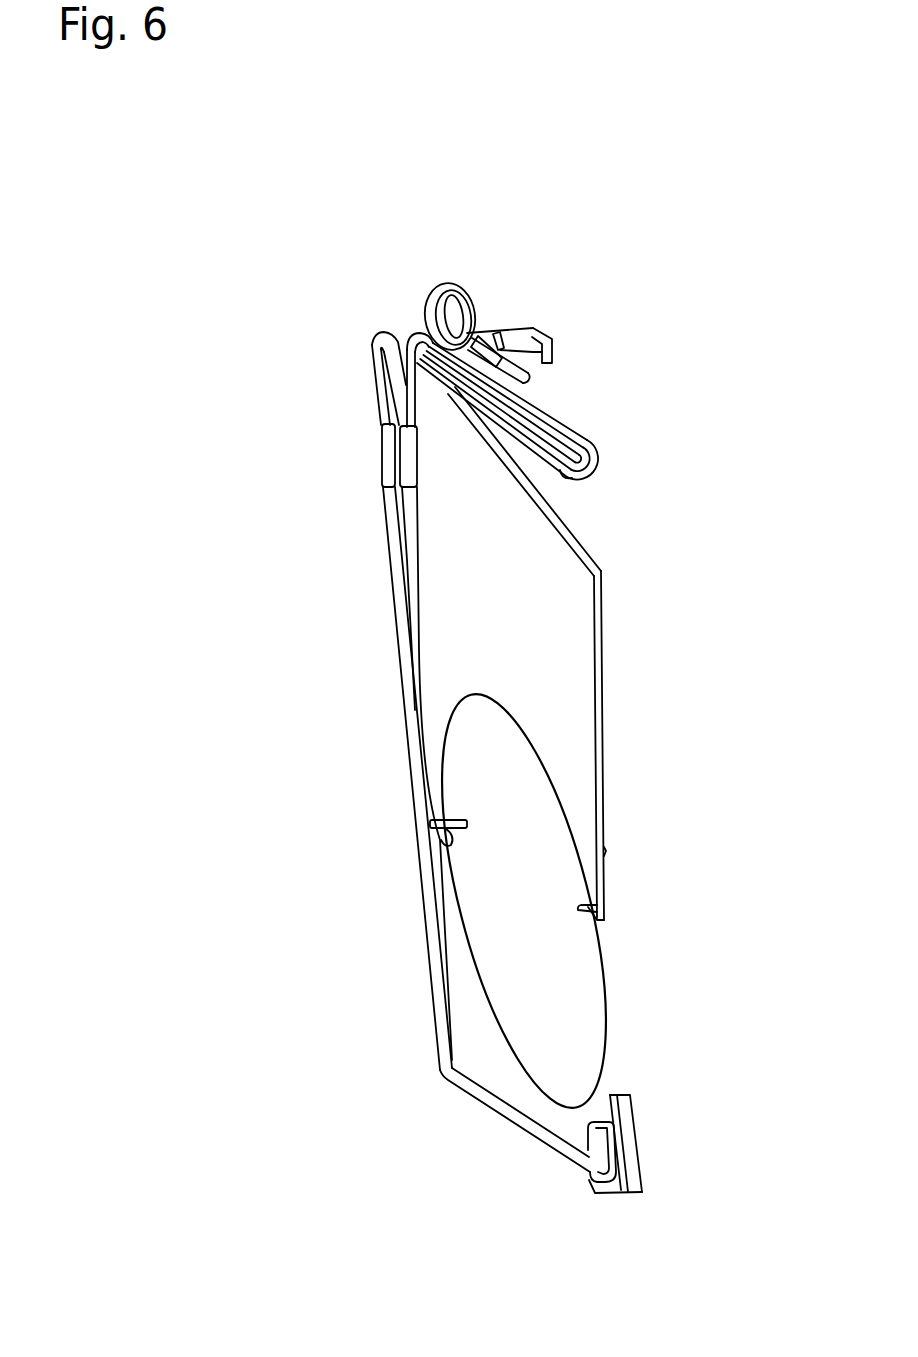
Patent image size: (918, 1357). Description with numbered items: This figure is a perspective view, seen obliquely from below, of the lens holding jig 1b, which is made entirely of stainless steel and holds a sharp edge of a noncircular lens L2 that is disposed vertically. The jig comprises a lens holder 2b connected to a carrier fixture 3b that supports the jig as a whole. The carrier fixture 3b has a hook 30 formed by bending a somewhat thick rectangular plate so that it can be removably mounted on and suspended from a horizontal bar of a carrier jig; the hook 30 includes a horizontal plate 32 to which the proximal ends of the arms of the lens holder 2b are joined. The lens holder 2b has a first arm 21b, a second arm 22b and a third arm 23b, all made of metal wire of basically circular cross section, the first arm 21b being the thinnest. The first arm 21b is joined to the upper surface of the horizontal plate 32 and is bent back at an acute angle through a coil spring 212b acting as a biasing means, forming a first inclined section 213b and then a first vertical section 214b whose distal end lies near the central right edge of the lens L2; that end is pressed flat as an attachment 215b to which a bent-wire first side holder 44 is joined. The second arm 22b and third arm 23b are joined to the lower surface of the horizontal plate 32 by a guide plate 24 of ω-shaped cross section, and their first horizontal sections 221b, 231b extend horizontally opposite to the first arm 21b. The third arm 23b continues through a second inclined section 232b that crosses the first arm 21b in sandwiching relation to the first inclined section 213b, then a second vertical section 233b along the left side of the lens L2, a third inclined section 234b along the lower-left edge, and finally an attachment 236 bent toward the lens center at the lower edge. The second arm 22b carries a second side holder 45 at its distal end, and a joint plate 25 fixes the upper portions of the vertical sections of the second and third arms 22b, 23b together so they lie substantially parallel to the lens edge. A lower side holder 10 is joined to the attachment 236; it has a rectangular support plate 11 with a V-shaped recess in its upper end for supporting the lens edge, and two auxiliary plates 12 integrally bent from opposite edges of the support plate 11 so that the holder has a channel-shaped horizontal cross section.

The lens holding jig 1b is at (268, 266).
The lens holder 2b is at (298, 435).
The carrier fixture 3b is at (570, 346).
The lower side holder 10 is at (650, 1137).
The support plate 11 is at (613, 1193).
The auxiliary plates 12 is at (637, 1178).
The first arm 21b is at (627, 613).
The second arm 22b is at (421, 535).
The third arm 23b is at (378, 1003).
The guide plate 24 is at (512, 367).
The joint plate 25 is at (385, 462).
The hook 30 is at (540, 318).
The horizontal plate 32 is at (492, 330).
The first side holder 44 is at (595, 936).
The second side holder 45 is at (450, 843).
The coil spring 212b is at (429, 295).
The first inclined section 213b is at (583, 542).
The first vertical section 214b is at (607, 687).
The attachment 215b is at (608, 879).
The first horizontal section 221b is at (573, 429).
The first horizontal section 231b is at (558, 477).
The second inclined section 232b is at (383, 331).
The second vertical section 233b is at (397, 669).
The third inclined section 234b is at (487, 1102).
The attachment 236 is at (602, 1137).
The lens L2 is at (605, 1032).